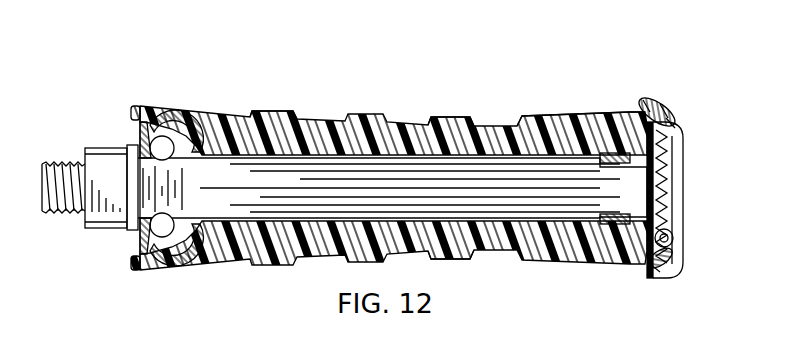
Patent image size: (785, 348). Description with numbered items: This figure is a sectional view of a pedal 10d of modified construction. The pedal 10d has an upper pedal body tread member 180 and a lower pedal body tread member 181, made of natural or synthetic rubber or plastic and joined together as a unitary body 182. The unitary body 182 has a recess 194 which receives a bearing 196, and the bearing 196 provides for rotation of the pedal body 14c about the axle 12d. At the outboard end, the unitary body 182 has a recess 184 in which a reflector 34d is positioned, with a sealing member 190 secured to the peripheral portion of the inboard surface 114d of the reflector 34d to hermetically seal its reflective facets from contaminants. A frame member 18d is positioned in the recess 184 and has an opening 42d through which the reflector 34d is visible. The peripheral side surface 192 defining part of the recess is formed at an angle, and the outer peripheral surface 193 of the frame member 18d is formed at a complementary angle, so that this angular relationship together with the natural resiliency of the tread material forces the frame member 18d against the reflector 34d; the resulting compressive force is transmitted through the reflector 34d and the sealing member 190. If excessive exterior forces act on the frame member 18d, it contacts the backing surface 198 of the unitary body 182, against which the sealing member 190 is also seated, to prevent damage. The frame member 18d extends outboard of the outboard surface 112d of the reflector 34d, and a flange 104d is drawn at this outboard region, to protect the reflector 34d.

The pedal 10d is at (157, 82).
The axle 12d is at (612, 195).
The housing body 14c is at (310, 113).
The upper pedal body tread member 180 is at (410, 128).
The lower pedal body tread member 181 is at (415, 258).
The unitary body 182 is at (598, 103).
The recess 194 is at (610, 150).
The bearing 196 is at (490, 128).
The peripheral side surface 192 is at (650, 106).
The outer peripheral surface 193 is at (665, 106).
The recess 184 is at (668, 114).
The flange 104d is at (672, 119).
The opening 42d is at (683, 148).
The reflector 34d is at (666, 172).
The sealing member 190 is at (668, 205).
The outboard surface 112d is at (668, 218).
The inboard surface 114d is at (660, 232).
The backing surface 198 is at (672, 260).
The frame member 18d is at (663, 253).